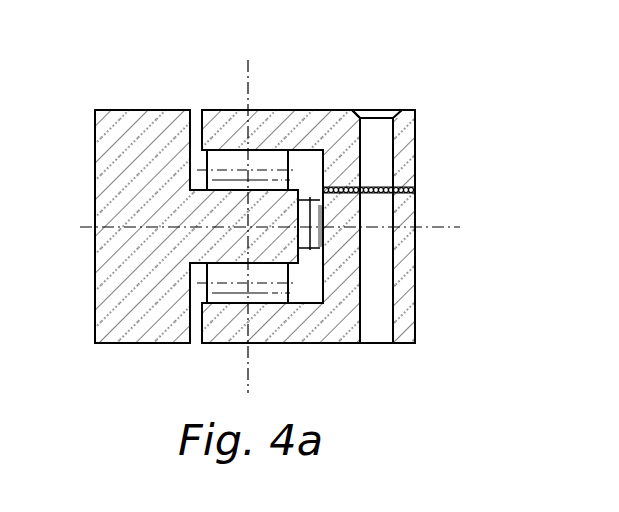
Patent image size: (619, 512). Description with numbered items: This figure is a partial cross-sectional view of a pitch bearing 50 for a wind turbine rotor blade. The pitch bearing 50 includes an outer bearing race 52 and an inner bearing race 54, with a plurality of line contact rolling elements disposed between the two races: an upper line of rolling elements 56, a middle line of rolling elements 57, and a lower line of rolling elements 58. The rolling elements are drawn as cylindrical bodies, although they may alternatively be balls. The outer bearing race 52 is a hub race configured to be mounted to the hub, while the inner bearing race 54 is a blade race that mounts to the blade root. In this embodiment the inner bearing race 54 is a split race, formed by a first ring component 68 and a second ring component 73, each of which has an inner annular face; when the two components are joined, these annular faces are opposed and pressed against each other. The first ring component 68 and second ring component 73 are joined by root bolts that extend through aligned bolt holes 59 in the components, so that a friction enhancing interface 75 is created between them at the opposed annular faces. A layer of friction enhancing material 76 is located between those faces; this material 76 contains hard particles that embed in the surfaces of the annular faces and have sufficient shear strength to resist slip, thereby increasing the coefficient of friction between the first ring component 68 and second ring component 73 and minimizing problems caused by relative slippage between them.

The pitch bearing 50 is at (140, 90).
The outer bearing race 52 is at (128, 295).
The inner bearing race 54 is at (230, 125).
The upper line of rolling elements 56 is at (268, 163).
The middle line of rolling elements 57 is at (322, 247).
The lower line of rolling elements 58 is at (268, 290).
The bolt holes 59 is at (357, 137).
The first ring component 68 is at (402, 142).
The second ring component 73 is at (405, 305).
The friction enhancing interface 75 is at (414, 186).
The layer of friction enhancing material 76 is at (392, 198).